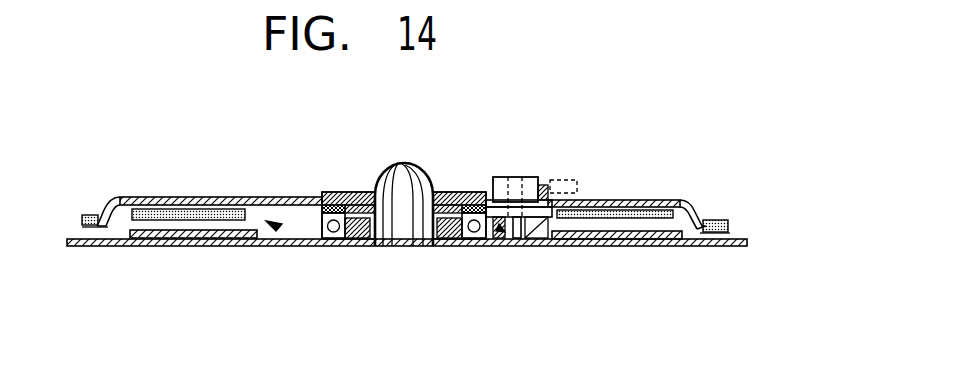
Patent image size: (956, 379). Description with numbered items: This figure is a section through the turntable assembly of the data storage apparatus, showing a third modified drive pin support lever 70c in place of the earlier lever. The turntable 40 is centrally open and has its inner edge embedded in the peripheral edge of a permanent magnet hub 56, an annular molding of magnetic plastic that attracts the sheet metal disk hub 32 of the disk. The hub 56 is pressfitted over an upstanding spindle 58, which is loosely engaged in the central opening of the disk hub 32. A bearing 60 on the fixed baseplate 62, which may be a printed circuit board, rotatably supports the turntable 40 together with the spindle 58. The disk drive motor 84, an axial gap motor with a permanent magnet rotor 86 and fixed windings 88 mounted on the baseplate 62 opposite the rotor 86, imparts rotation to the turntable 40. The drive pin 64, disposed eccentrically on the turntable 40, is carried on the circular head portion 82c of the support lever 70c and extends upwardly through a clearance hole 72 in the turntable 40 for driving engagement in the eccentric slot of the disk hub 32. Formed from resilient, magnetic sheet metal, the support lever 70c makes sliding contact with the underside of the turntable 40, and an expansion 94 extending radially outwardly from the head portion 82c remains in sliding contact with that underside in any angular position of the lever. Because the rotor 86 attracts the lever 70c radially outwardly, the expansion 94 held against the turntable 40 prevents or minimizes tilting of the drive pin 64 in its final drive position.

The disk hub 32 is at (577, 184).
The turntable 40 is at (652, 200).
The permanent magnet hub 56 is at (446, 192).
The spindle 58 is at (398, 163).
The bearing 60 is at (470, 240).
The baseplate 62 is at (716, 246).
The drive pin 64 is at (500, 177).
The drive pin support lever 70c is at (501, 232).
The clearance hole 72 is at (543, 200).
The head portion 82c is at (522, 240).
The disk drive motor 84 is at (276, 228).
The permanent magnet rotor 86 is at (189, 210).
The fixed windings 88 is at (220, 234).
The expansion 94 is at (545, 236).